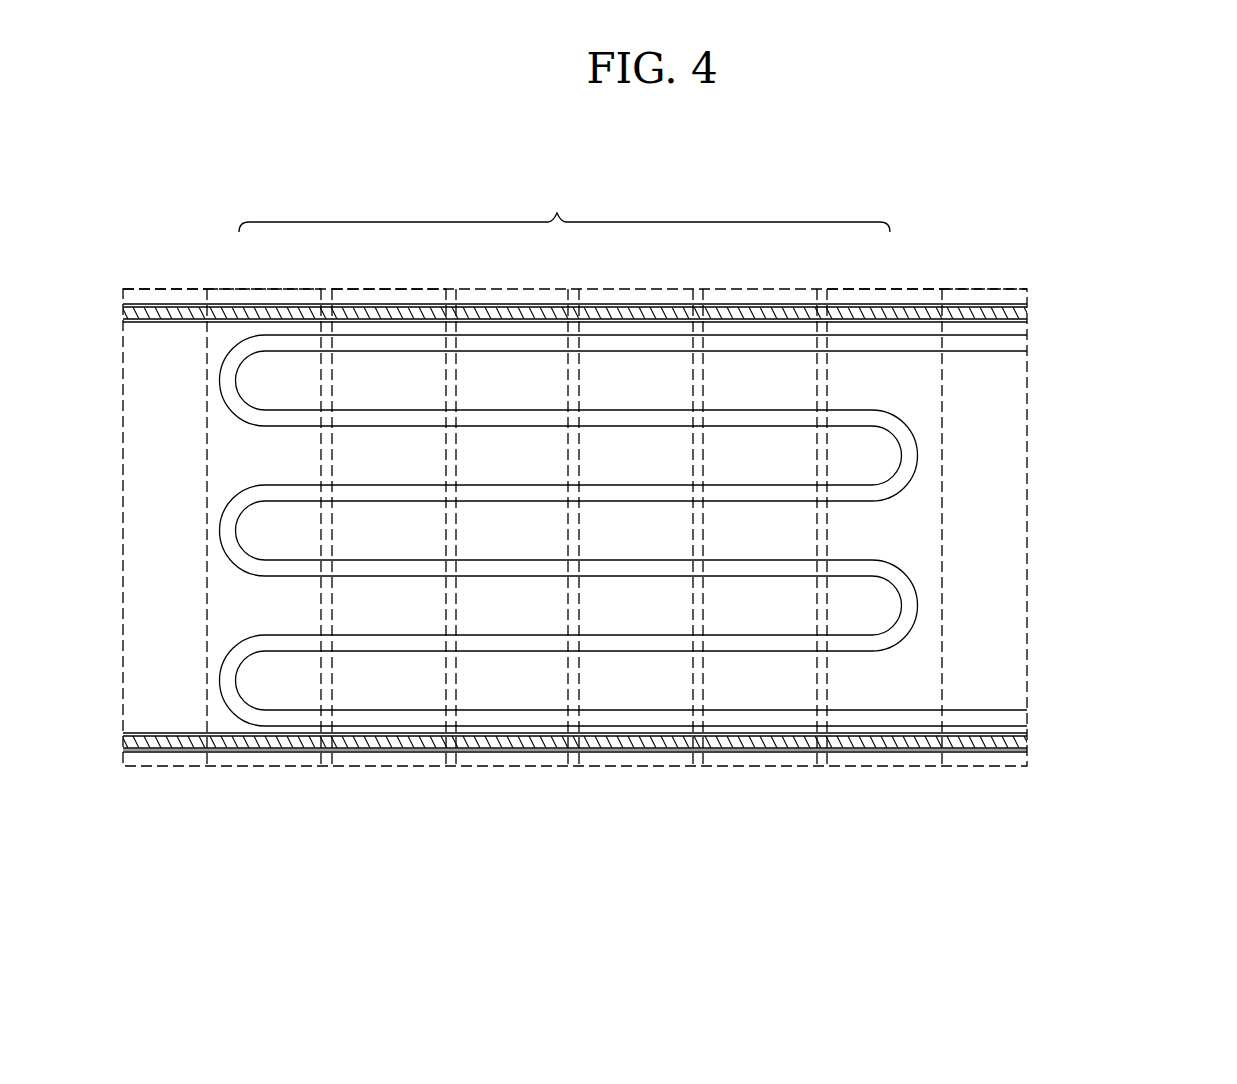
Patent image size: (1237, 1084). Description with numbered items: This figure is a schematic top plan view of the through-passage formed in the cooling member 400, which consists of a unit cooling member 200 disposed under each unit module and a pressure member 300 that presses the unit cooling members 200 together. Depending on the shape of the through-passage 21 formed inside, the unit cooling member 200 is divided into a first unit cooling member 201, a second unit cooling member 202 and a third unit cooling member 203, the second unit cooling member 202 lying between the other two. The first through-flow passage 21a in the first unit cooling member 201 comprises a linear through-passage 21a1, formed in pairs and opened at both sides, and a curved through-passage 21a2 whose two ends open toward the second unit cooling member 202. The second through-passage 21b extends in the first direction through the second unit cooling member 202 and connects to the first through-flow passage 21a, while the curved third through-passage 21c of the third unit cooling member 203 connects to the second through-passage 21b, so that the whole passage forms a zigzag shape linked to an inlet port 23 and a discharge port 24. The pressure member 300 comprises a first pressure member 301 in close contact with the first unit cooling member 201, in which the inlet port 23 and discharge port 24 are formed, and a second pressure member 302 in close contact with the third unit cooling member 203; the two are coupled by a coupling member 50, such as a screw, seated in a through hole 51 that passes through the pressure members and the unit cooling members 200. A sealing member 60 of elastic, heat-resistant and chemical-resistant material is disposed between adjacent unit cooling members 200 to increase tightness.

The through-passage 21 is at (720, 571).
The first through-flow passage 21a is at (695, 493).
The linear through-passage 21a1 is at (984, 352).
The curved through-passage 21a2 is at (917, 450).
The second through-passage 21b is at (645, 643).
The third through-passage 21c is at (273, 717).
The inlet port 23 is at (1018, 344).
The discharge port 24 is at (1018, 717).
The coupling member 50 is at (1030, 310).
The through hole 51 is at (913, 745).
The sealing member 60 is at (325, 760).
The unit cooling member 200 is at (564, 208).
The first unit cooling member 201 is at (876, 298).
The second unit cooling member 202 is at (390, 298).
The third unit cooling member 203 is at (260, 298).
The pressure member 300 is at (1097, 150).
The first pressure member 301 is at (987, 298).
The second pressure member 302 is at (157, 298).
The cooling member 400 is at (1163, 83).